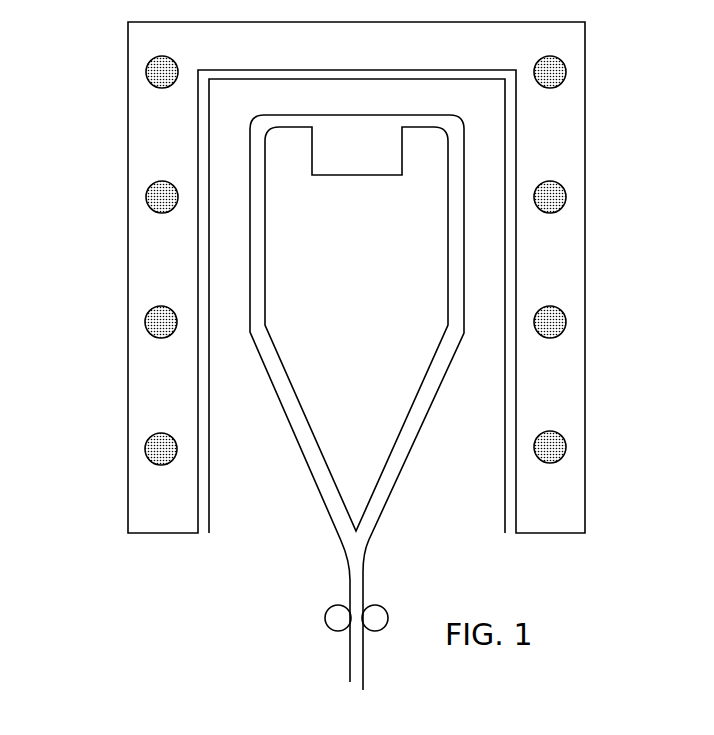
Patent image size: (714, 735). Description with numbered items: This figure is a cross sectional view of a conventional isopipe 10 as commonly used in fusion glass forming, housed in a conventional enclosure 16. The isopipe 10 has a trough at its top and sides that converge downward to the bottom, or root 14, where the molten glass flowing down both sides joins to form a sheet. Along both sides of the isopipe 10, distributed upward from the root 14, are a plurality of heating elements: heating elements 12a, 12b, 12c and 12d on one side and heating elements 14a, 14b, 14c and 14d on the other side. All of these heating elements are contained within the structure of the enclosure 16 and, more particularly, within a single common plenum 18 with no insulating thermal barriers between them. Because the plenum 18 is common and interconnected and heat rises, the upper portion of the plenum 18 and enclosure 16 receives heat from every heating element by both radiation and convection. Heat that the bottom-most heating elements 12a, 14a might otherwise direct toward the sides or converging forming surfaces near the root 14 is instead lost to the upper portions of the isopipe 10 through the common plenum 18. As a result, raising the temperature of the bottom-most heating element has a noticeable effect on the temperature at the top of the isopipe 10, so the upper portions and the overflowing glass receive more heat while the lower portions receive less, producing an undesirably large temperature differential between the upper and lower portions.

The isopipe 10 is at (375, 262).
The heating element 12a is at (565, 437).
The heating element 12b is at (563, 305).
The heating element 12c is at (565, 190).
The heating element 12d is at (552, 88).
The root 14 is at (366, 545).
The heating element 14a is at (150, 434).
The heating element 14b is at (148, 309).
The heating element 14c is at (150, 185).
The heating element 14d is at (150, 61).
The enclosure 16 is at (120, 125).
The common plenum 18 is at (145, 378).